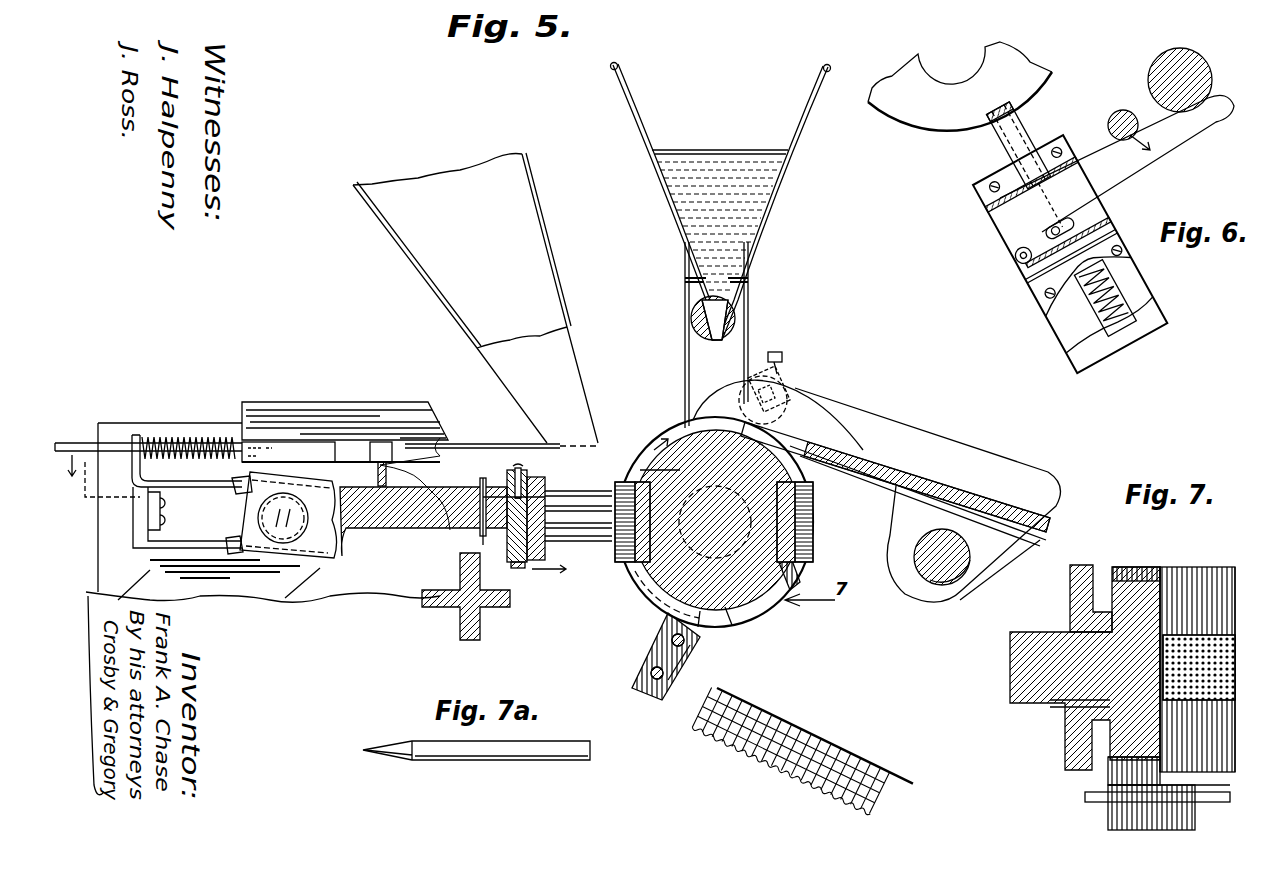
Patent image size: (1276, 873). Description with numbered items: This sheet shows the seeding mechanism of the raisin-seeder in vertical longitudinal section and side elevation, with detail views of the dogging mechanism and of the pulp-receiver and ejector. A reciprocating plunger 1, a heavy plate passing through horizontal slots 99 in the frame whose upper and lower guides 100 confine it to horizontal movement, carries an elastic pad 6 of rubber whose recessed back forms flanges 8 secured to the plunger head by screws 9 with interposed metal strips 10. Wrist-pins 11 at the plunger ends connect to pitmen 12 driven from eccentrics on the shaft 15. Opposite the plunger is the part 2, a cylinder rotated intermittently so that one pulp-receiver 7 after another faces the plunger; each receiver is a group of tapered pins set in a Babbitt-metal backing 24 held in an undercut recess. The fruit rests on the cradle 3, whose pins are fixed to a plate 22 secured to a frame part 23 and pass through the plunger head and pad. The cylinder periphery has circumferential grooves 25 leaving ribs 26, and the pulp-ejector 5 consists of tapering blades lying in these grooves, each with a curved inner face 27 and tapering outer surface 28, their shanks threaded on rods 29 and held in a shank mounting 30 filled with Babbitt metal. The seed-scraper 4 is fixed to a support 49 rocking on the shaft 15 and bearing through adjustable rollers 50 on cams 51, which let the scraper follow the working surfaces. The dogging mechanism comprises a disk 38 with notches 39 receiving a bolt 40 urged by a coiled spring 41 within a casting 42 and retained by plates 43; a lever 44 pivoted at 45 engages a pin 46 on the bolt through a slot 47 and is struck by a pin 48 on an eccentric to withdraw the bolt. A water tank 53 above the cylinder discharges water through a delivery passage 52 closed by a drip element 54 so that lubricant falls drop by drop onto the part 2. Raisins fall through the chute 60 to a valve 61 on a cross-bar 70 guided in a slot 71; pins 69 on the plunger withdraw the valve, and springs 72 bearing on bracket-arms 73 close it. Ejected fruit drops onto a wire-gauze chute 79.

In FIG. 5, the reciprocating plunger 1 is at (436, 478).
In FIG. 5, the part carrying the pulp-receivers 2 is at (652, 598).
In FIG. 7, the part carrying the pulp-receivers 2 is at (1085, 668).
In FIG. 5, the cradle 3 is at (592, 545).
In FIG. 5, the seed-scraper 4 is at (800, 430).
In FIG. 5, the pulp-ejector 5 is at (752, 612).
In FIG. 5, the elastic pad 6 is at (547, 486).
In FIG. 5, the pulp-receiver 7 is at (812, 510).
In FIG. 7, the pulp-receiver 7 is at (1248, 646).
In FIG. 7A, the pulp-receiver 7 is at (490, 764).
In FIG. 5, the flanges 8 is at (504, 478).
In FIG. 5, the screws 9 is at (520, 466).
In FIG. 5, the metal strips 10 is at (530, 476).
In FIG. 5, the wrist-pins 11 is at (283, 518).
In FIG. 5, the pitmen 12 is at (300, 562).
In FIG. 5, the shaft 15 is at (940, 580).
In FIG. 6, the shaft 15 is at (1198, 70).
In FIG. 5, the plate 22 is at (480, 536).
In FIG. 5, the frame part 23 is at (440, 608).
In FIG. 5, the backing 24 is at (812, 484).
In FIG. 7, the circumferential grooves 25 is at (1128, 568).
In FIG. 7, the circumferential ribs 26 is at (1152, 568).
In FIG. 5, the inner face of blade 27 is at (730, 622).
In FIG. 5, the outer surface of blade 28 is at (770, 594).
In FIG. 7, the outer surface of blade 28 is at (1108, 778).
In FIG. 5, the rods 29 is at (694, 662).
In FIG. 7, the rods 29 is at (1085, 795).
In FIG. 5, the arm 30 is at (660, 657).
In FIG. 7, the arm 30 is at (1108, 820).
In FIG. 6, the circular disk 38 is at (920, 118).
In FIG. 6, the notches 39 is at (985, 104).
In FIG. 6, the bolt 40 is at (1036, 135).
In FIG. 6, the coiled spring 41 is at (1095, 299).
In FIG. 6, the casting 42 is at (1070, 254).
In FIG. 6, the plates 43 is at (1056, 253).
In FIG. 6, the lever 44 is at (1135, 180).
In FIG. 6, the pivot 45 is at (1020, 288).
In FIG. 6, the pin 46 is at (1049, 209).
In FIG. 6, the slot 47 is at (1075, 207).
In FIG. 6, the pin 48 is at (1118, 108).
In FIG. 5, the support 49 is at (973, 518).
In FIG. 5, the adjustable rollers 50 is at (778, 392).
In FIG. 7, the cams 51 is at (1068, 588).
In FIG. 5, the delivery tube 52 is at (750, 296).
In FIG. 5, the tank 53 is at (800, 128).
In FIG. 5, the ball valve 54 is at (724, 334).
In FIG. 5, the chute 60 is at (475, 298).
In FIG. 5, the valve 61 is at (455, 441).
In FIG. 5, the studs or pins 69 is at (378, 480).
In FIG. 5, the cross-bar 70 is at (341, 453).
In FIG. 5, the slot 71 is at (340, 380).
In FIG. 5, the springs 72 is at (168, 425).
In FIG. 5, the bracket-arms 73 is at (130, 445).
In FIG. 5, the wire-gauze chute 79 is at (762, 775).
In FIG. 5, the horizontal slots 99 is at (150, 537).
In FIG. 5, the upper and lower guides 100 is at (150, 545).